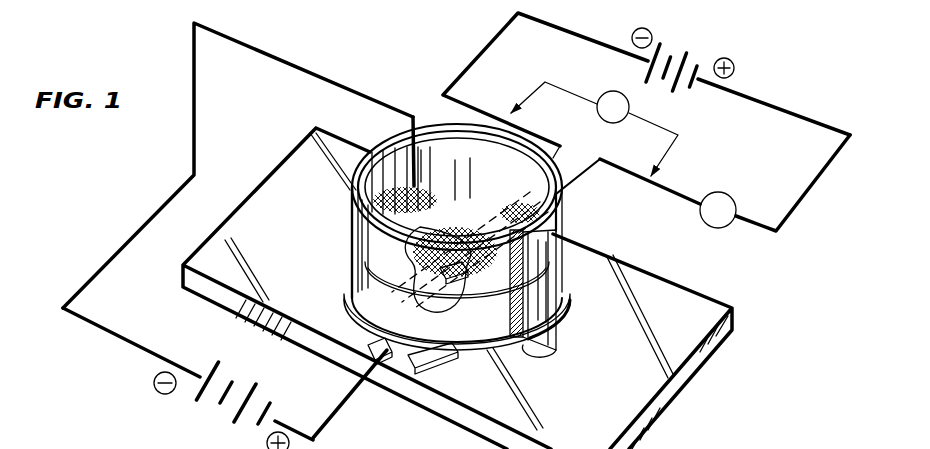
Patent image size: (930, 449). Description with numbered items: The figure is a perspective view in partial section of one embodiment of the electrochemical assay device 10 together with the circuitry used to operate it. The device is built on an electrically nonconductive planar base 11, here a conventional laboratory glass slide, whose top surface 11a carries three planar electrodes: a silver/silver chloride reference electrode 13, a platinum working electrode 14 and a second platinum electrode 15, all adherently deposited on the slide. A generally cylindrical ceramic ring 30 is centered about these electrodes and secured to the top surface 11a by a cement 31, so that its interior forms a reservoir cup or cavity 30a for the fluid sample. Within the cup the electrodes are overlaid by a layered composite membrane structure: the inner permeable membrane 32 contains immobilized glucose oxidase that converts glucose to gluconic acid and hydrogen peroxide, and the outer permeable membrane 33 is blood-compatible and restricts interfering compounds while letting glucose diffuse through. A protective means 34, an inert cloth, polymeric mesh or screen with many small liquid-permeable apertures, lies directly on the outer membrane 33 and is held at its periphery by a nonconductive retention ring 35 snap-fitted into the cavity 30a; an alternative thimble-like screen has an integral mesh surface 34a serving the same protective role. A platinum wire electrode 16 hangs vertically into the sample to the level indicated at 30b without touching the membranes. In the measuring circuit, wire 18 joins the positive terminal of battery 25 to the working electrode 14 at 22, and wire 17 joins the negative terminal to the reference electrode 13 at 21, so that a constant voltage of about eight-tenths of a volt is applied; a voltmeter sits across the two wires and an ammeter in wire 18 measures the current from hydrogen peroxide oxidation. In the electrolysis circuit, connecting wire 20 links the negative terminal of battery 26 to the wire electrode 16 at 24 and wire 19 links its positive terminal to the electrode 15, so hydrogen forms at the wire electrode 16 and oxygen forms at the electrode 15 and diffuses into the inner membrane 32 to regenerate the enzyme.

The electrochemical assay device 10 is at (284, 144).
The base surface 11 is at (722, 342).
The top surface of the base 11a is at (688, 303).
The silver/silver chloride electrode 13 is at (503, 211).
The platinum working electrode 14 is at (434, 358).
The platinum electrode 15 is at (392, 290).
The platinum wire electrode 16 is at (421, 150).
The wire 17 is at (498, 36).
The wire 18 is at (685, 195).
The wire 19 is at (345, 406).
The connecting wire 20 is at (292, 64).
The connection point on reference electrode 21 is at (503, 210).
The connection point on working electrode 22 is at (557, 223).
The connection point on wire electrode 24 is at (413, 116).
The battery 25 is at (696, 41).
The battery 26 is at (228, 416).
The ceramic ring 30 is at (561, 260).
The reservoir cup cavity 30a is at (483, 166).
The sample level 30b is at (438, 155).
The cement 31 is at (571, 318).
The inner permeable membrane 32 is at (500, 333).
The outer permeable membrane 33 is at (563, 338).
The protective means 34 is at (396, 247).
The mesh surface 34a is at (391, 194).
The retention ring 35 is at (560, 172).